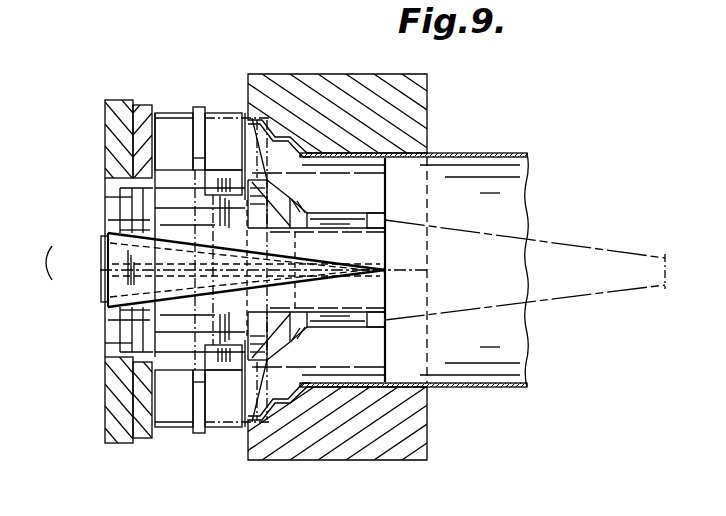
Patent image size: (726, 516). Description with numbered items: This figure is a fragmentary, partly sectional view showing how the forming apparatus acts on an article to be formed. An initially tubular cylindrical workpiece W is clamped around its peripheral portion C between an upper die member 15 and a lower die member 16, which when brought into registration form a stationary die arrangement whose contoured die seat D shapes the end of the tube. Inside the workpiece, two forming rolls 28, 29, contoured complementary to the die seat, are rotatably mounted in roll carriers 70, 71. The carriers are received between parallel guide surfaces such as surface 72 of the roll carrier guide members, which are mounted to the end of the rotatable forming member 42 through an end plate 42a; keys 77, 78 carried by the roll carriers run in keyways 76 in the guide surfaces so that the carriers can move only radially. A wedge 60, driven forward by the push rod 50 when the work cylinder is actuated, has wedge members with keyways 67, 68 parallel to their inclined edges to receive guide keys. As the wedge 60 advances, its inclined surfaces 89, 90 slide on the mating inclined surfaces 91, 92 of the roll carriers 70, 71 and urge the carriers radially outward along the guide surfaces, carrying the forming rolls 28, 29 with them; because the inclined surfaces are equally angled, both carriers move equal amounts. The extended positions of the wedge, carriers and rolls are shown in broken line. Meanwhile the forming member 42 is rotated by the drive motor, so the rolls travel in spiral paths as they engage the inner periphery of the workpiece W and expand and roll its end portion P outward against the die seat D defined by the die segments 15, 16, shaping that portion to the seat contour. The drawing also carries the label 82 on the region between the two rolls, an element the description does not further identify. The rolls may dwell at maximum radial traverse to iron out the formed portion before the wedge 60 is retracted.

The upper die member 15 is at (342, 97).
The lower die member 16 is at (350, 443).
The end portion of workpiece P is at (285, 133).
The workpiece W is at (530, 157).
The forming member 42 is at (112, 138).
The end plate 42a is at (157, 433).
The inclined surface of wedge plate 90 is at (113, 217).
The inclined surface of wedge plate 89 is at (113, 318).
The roll carrier 70 is at (174, 178).
The keyway 76 is at (203, 128).
The key 78 is at (237, 156).
The inclined surface of roll carrier 91 is at (179, 229).
The key 77 is at (198, 372).
The roll carrier 71 is at (237, 383).
The guide surface 72 is at (240, 402).
The inclined surface of roll carrier 92 is at (200, 332).
The forming roll 28 is at (278, 198).
The forming roll 29 is at (278, 340).
The end plate 82 is at (352, 253).
The peripheral portion of workpiece C is at (378, 165).
The contoured die seat D is at (283, 415).
The wedge 60 is at (612, 251).
The keyway 67 is at (106, 253).
The push rod 50 is at (52, 246).
The keyway 68 is at (104, 300).